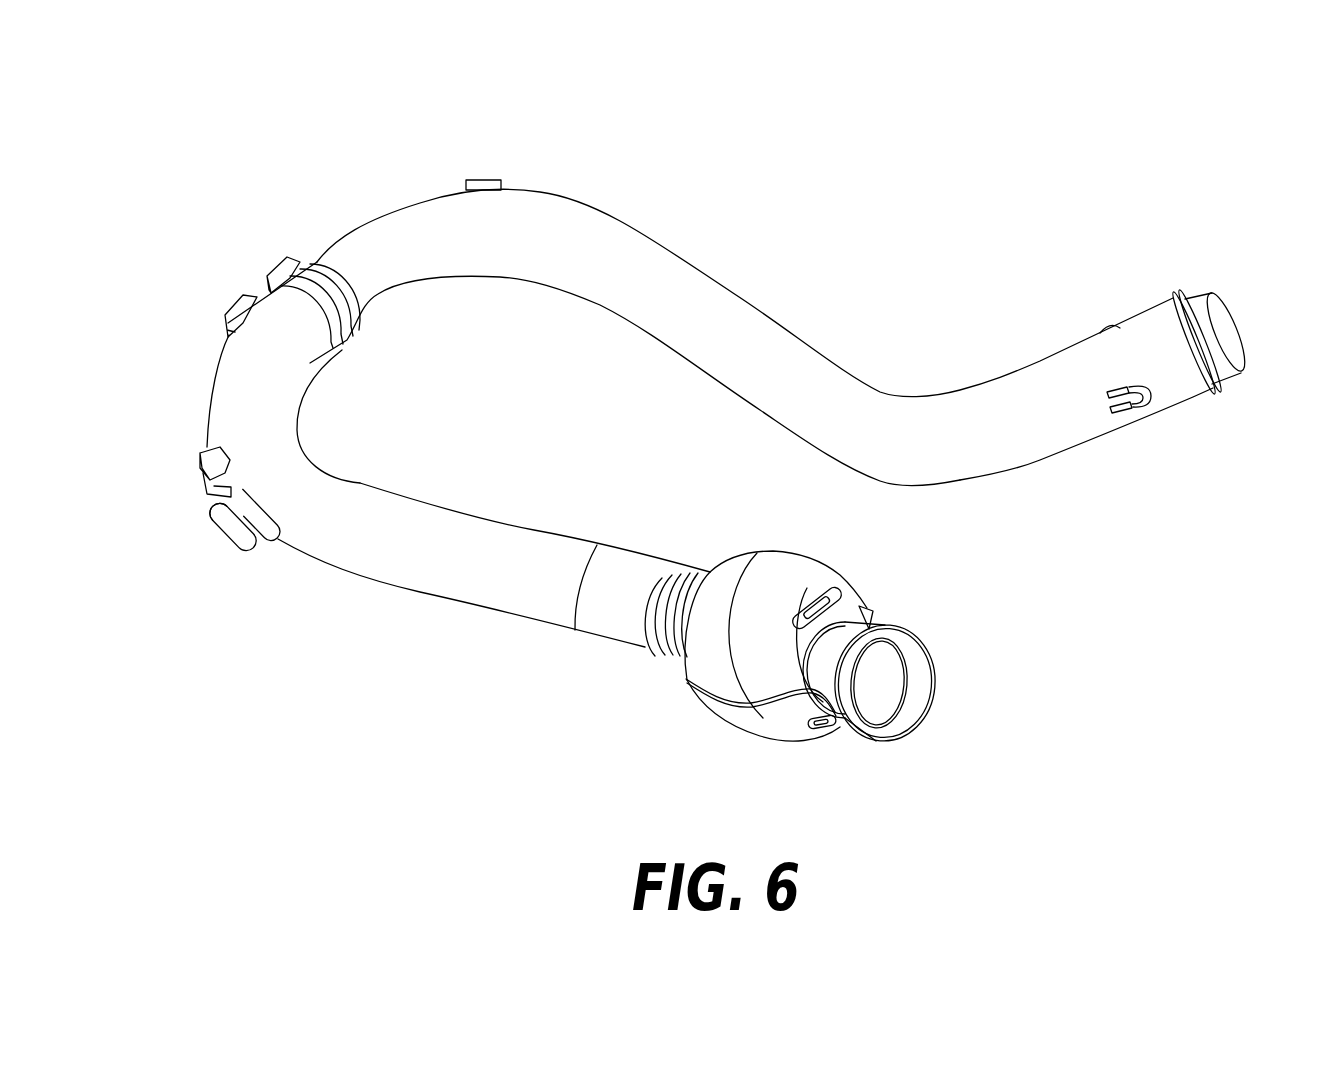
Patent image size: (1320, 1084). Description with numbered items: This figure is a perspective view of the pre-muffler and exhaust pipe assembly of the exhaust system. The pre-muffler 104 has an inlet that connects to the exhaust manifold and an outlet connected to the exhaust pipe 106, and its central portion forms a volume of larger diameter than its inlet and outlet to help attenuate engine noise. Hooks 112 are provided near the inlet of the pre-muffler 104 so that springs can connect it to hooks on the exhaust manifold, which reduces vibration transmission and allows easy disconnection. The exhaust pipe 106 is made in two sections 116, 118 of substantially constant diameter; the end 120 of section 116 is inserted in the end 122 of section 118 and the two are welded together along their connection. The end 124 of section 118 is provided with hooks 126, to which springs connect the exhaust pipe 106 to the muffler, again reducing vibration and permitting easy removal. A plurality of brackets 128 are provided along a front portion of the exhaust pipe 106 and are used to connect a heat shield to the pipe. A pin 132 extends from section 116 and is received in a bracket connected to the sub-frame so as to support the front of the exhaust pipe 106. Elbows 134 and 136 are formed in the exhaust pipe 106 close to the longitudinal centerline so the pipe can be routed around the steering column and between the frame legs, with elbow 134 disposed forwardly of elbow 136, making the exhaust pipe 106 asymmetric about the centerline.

The pre-muffler 104 is at (732, 715).
The exhaust pipe 106 is at (373, 298).
The hooks 112 is at (840, 602).
The section 116 is at (498, 600).
The section 118 is at (708, 303).
The end 120 is at (290, 437).
The end 122 is at (318, 278).
The end 124 is at (1187, 391).
The hooks 126 is at (1127, 407).
The brackets 128 is at (485, 178).
The pin 132 is at (233, 530).
The elbow 134 is at (657, 634).
The elbow 136 is at (935, 470).